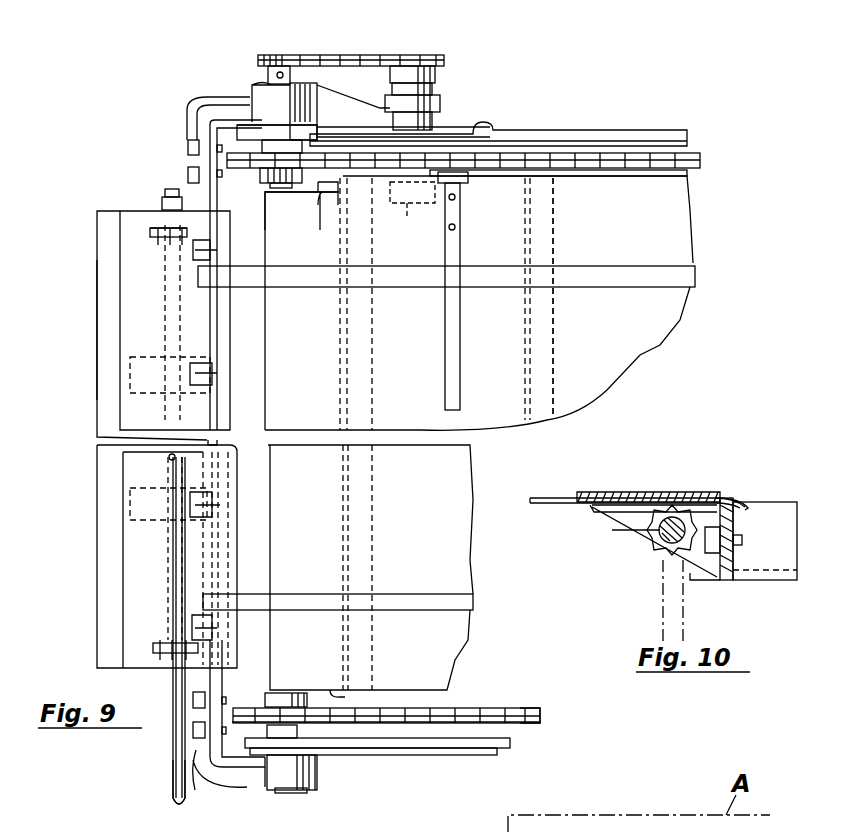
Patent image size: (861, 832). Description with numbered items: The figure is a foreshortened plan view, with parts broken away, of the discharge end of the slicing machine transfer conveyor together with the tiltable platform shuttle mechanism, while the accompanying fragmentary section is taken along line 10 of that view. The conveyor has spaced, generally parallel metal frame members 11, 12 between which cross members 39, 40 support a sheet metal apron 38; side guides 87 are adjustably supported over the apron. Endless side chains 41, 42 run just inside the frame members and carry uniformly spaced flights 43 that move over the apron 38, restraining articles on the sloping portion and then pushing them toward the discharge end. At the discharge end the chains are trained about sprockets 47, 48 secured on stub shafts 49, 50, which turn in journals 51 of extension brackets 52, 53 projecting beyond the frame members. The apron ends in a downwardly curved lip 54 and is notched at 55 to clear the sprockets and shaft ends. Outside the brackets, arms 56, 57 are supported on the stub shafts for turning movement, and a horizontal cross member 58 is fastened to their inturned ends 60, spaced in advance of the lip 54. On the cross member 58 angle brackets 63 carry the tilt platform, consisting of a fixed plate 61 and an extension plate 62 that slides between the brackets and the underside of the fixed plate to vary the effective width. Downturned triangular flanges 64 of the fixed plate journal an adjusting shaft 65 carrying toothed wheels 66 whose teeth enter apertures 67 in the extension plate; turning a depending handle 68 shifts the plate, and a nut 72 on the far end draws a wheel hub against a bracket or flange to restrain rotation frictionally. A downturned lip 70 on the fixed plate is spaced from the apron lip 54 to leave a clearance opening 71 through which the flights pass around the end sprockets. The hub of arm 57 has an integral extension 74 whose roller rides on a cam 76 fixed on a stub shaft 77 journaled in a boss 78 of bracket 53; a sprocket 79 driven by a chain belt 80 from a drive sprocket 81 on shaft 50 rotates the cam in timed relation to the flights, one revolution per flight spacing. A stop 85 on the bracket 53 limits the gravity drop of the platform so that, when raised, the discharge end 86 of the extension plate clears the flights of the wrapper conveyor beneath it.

In FIG. 9, the section line 10— 10 is at (69, 646).
In FIG. 9, the frame member 11 is at (73, 30).
In FIG. 9, the frame member 12 is at (590, 136).
In FIG. 9, the sheet metal apron 38 is at (592, 382).
In FIG. 9, the cross member 39 is at (374, 336).
In FIG. 9, the cross member 40 is at (555, 334).
In FIG. 9, the side chain 41 is at (518, 708).
In FIG. 9, the side chain 42 is at (618, 156).
In FIG. 9, the flight 43 is at (458, 356).
In FIG. 9, the sprocket 47 is at (266, 700).
In FIG. 9, the sprocket 48 is at (264, 180).
In FIG. 9, the stub shaft 49 is at (298, 794).
In FIG. 9, the stub shaft 50 is at (282, 194).
In FIG. 9, the journal 51 is at (240, 133).
In FIG. 9, the extension bracket 52 is at (415, 752).
In FIG. 9, the extension bracket 53 is at (500, 126).
In FIG. 9, the downwardly curved lip 54 is at (262, 362).
In FIG. 9, the notch 55 is at (345, 690).
In FIG. 9, the arm 56 is at (243, 790).
In FIG. 9, the arm 57 is at (232, 117).
In FIG. 9, the cross member 58 is at (202, 198).
In FIG. 10, the cross member 58 is at (736, 530).
In FIG. 9, the inturned end 60 is at (208, 139).
In FIG. 10, the fixed plate 61 is at (727, 496).
In FIG. 9, the extension plate 62 is at (100, 282).
In FIG. 10, the extension plate 62 is at (555, 496).
In FIG. 9, the angle bracket 63 is at (132, 404).
In FIG. 10, the angle bracket 63 is at (640, 512).
In FIG. 10, the triangular flange 64 is at (682, 565).
In FIG. 9, the adjusting shaft 65 is at (173, 696).
In FIG. 10, the adjusting shaft 65 is at (662, 560).
In FIG. 9, the toothed wheel 66 is at (128, 214).
In FIG. 10, the toothed wheel 66 is at (648, 538).
In FIG. 9, the aperture 67 is at (160, 640).
In FIG. 10, the aperture 67 is at (690, 492).
In FIG. 9, the handle 68 is at (173, 792).
In FIG. 10, the handle 68 is at (660, 616).
In FIG. 10, the downturned lip 70 is at (750, 502).
In FIG. 9, the clearance opening 71 is at (250, 544).
In FIG. 9, the nut 72 is at (162, 200).
In FIG. 9, the extension 74 is at (302, 104).
In FIG. 9, the cam 76 is at (442, 102).
In FIG. 9, the stub shaft 77 is at (408, 218).
In FIG. 9, the boss 78 is at (436, 130).
In FIG. 9, the sprocket 79 is at (438, 78).
In FIG. 9, the chain belt 80 is at (352, 58).
In FIG. 9, the drive sprocket 81 is at (267, 76).
In FIG. 9, the stop 85 is at (342, 130).
In FIG. 9, the discharge end 86 is at (97, 367).
In FIG. 10, the discharge end 86 is at (530, 504).
In FIG. 9, the side guide 87 is at (614, 268).